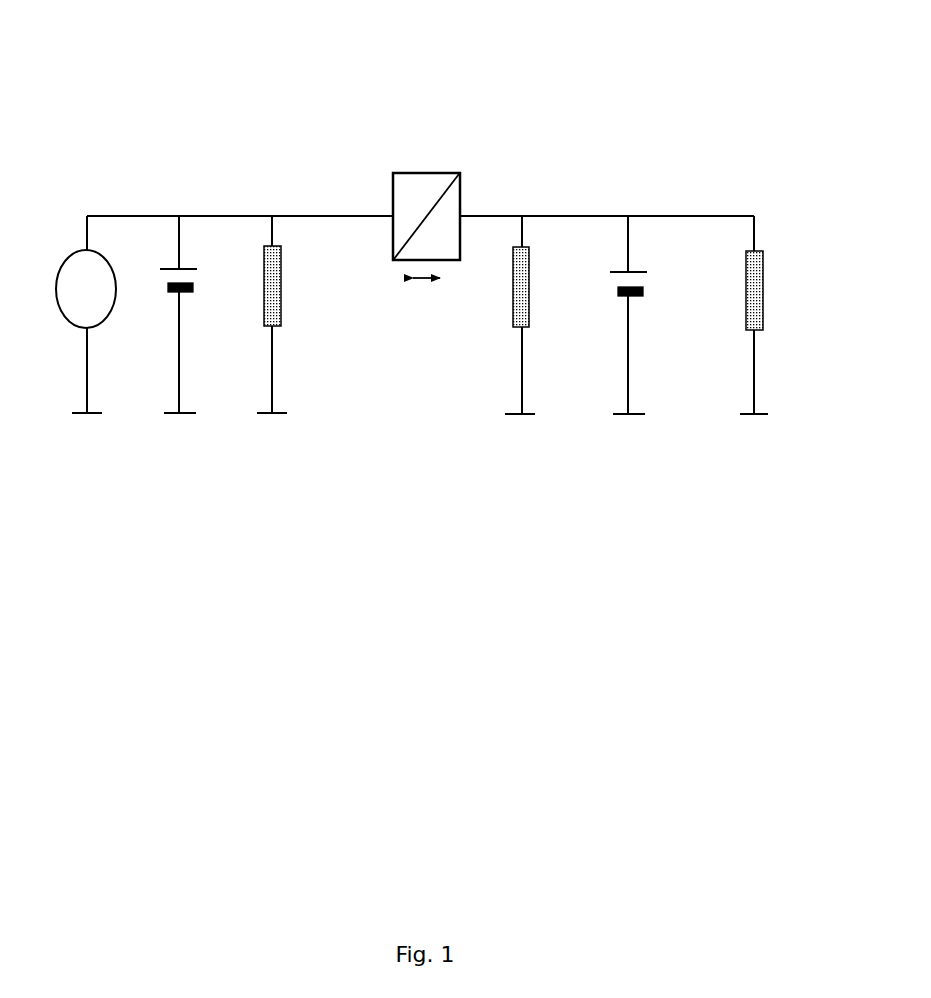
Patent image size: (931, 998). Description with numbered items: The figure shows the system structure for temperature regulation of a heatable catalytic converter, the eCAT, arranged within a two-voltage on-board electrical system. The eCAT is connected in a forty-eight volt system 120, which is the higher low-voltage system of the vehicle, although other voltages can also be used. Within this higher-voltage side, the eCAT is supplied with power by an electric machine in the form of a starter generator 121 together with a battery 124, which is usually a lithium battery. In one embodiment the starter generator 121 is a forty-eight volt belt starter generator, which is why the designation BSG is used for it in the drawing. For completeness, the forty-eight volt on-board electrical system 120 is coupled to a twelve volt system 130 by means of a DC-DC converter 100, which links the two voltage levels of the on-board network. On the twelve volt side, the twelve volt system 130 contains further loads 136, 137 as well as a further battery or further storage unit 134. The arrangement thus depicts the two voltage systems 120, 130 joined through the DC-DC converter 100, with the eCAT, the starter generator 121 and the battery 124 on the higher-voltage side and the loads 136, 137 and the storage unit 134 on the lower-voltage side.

The DC-DC converter 100 is at (425, 157).
The 48 V system 120 is at (165, 113).
The starter generator 121 is at (108, 330).
The battery 124 is at (190, 324).
The heatable catalytic converter eCAT is at (288, 333).
The 12 V system 130 is at (603, 125).
The further storage unit 134 is at (638, 335).
The load 136 is at (530, 333).
The load 137 is at (767, 337).